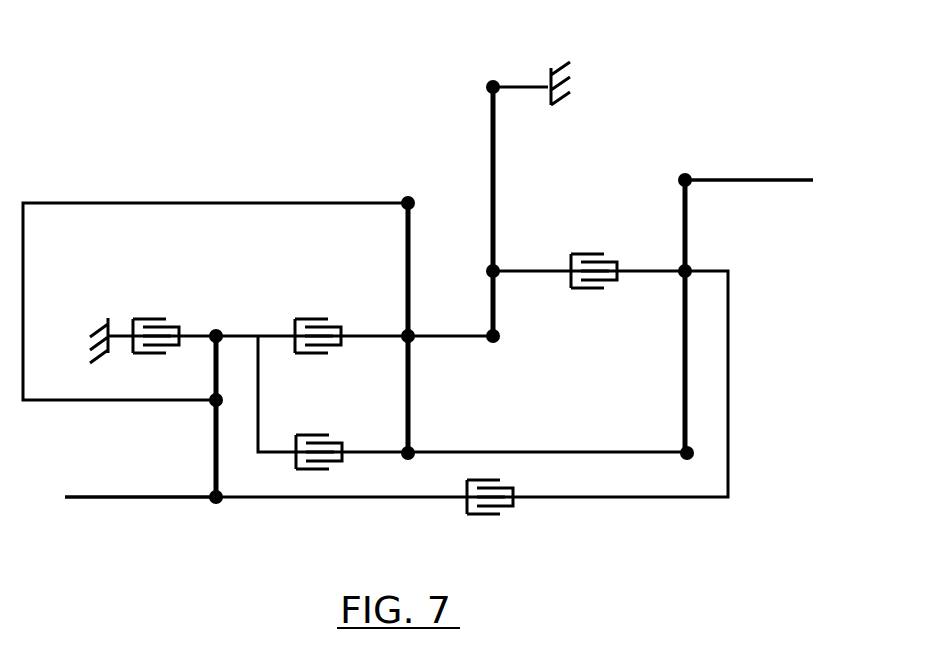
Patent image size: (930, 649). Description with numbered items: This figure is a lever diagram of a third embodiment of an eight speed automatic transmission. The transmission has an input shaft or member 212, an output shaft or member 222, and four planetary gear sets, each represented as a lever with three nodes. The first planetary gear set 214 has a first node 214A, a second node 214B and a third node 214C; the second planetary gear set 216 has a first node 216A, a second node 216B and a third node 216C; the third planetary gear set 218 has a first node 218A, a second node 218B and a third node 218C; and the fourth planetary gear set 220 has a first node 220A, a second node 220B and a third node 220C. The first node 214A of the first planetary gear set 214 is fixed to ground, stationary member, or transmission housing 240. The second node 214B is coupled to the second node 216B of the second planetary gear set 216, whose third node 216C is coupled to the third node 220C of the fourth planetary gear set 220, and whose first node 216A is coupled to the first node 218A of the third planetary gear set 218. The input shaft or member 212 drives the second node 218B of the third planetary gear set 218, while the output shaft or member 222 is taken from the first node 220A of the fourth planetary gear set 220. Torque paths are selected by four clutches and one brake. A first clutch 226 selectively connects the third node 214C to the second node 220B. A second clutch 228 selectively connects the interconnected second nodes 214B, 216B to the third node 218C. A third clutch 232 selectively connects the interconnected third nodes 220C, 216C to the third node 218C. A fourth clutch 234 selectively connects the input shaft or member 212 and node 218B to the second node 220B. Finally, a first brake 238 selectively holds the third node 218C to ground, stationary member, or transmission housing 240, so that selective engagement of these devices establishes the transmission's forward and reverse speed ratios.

The input shaft or member 212 is at (118, 500).
The first planetary gear set 214 is at (477, 170).
The first node of first planetary gear set 214A is at (497, 90).
The second node of first planetary gear set 214B is at (497, 339).
The third node of first planetary gear set 214C is at (496, 268).
The second planetary gear set 216 is at (422, 278).
The first node of second planetary gear set 216A is at (404, 207).
The second node of second planetary gear set 216B is at (404, 333).
The third node of second planetary gear set 216C is at (412, 450).
The third planetary gear set 218 is at (182, 462).
The first node of third planetary gear set 218A is at (213, 405).
The second node of third planetary gear set 218B is at (218, 500).
The third node of third planetary gear set 218C is at (218, 333).
The fourth planetary gear set 220 is at (660, 213).
The first node of fourth planetary gear set 220A is at (690, 183).
The second node of fourth planetary gear set 220B is at (690, 268).
The third node of fourth planetary gear set 220C is at (690, 455).
The output shaft or member 222 is at (728, 178).
The first clutch 226 is at (587, 292).
The second clutch 228 is at (322, 357).
The third clutch 232 is at (320, 475).
The fourth clutch 234 is at (482, 515).
The first brake 238 is at (142, 318).
The ground, stationary member, or transmission housing 240 is at (112, 340).